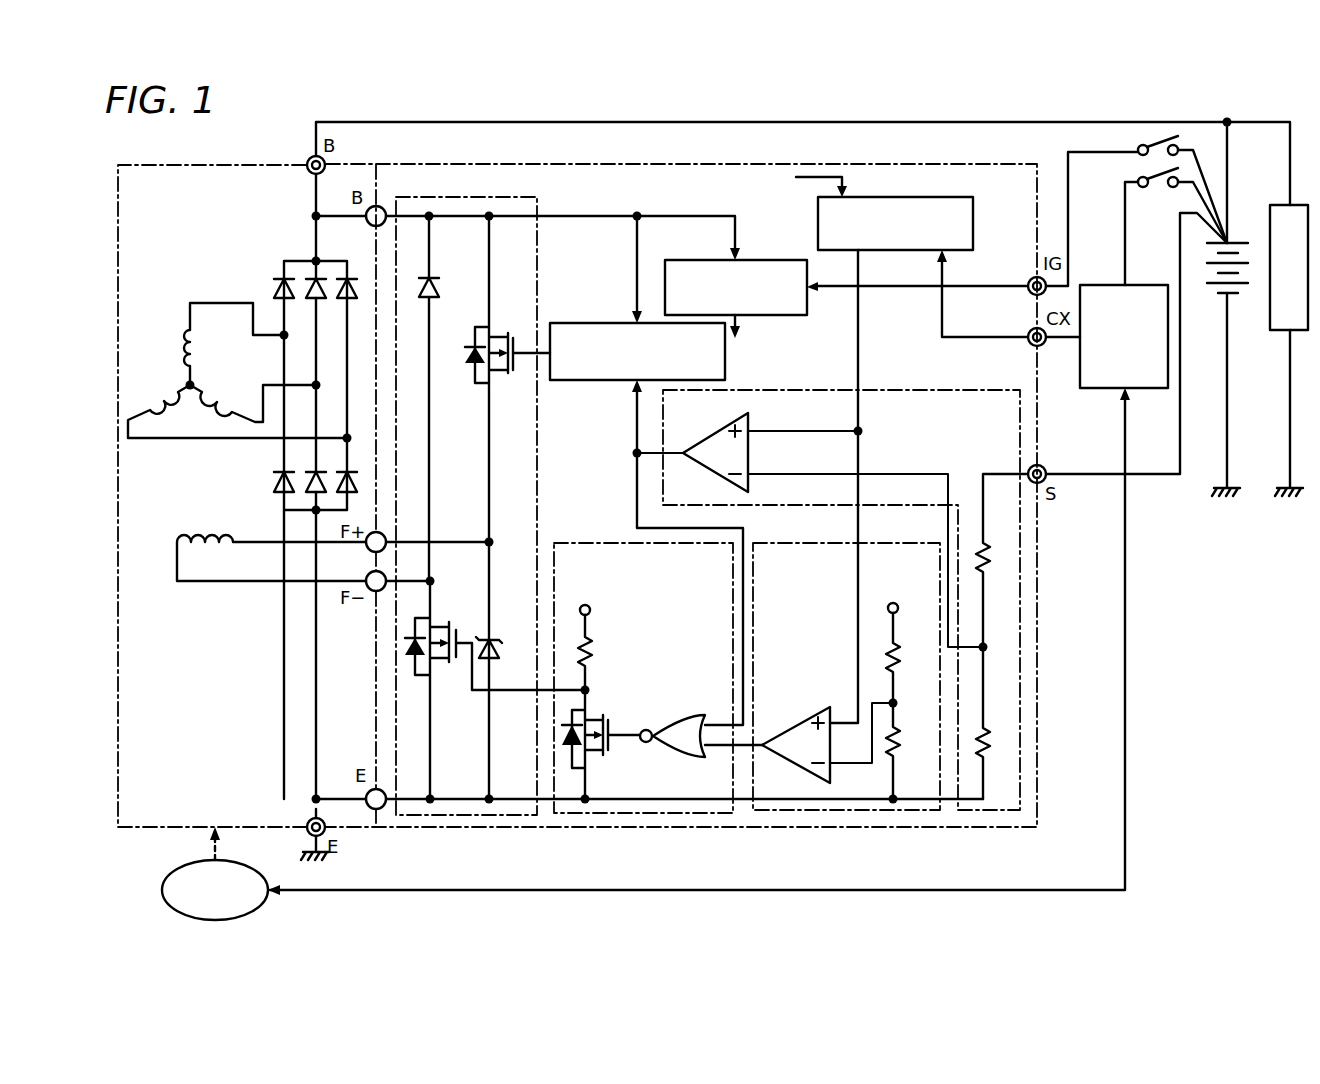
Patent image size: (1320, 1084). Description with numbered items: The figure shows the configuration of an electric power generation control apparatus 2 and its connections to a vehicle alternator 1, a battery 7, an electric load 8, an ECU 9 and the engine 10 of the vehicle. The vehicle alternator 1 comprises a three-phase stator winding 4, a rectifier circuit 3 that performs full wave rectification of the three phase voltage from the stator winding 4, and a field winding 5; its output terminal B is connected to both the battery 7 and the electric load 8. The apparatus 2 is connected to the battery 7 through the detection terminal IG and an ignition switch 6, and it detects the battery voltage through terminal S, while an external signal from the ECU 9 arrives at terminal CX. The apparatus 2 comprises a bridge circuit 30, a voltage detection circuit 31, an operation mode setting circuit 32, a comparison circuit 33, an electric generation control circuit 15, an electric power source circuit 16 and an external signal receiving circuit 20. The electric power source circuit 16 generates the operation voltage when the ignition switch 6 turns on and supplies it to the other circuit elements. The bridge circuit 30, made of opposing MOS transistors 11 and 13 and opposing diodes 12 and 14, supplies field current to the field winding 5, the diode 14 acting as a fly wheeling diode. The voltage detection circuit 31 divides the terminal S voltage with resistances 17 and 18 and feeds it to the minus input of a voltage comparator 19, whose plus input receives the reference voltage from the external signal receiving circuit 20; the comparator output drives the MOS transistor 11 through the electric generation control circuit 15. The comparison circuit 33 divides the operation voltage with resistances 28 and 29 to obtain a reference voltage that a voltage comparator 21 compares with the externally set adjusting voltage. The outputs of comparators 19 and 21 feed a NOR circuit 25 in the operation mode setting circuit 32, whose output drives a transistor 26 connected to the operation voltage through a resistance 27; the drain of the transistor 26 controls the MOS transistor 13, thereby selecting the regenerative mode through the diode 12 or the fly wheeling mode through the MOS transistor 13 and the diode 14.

The vehicle alternator 1 is at (282, 163).
The electric power generation control apparatus 2 is at (1036, 163).
The rectifier circuit 3 is at (303, 261).
The three-phase stator winding 4 is at (186, 382).
The field winding 5 is at (205, 535).
The ignition switch 6 is at (1138, 145).
The battery 7 is at (1236, 243).
The electric load 8 is at (1297, 205).
The ECU 9 is at (1100, 285).
The engine 10 is at (176, 868).
The MOS transistor 11 is at (496, 336).
The diode 12 is at (436, 278).
The MOS transistor 13 is at (440, 625).
The fly wheeling diode 14 is at (492, 640).
The electric generation control circuit 15 is at (590, 323).
The electric power source circuit 16 is at (772, 260).
The resistance 17 is at (985, 572).
The resistance 18 is at (985, 728).
The voltage comparator 19 is at (710, 437).
The external signal receiving circuit 20 is at (973, 210).
The voltage comparator 21 is at (800, 725).
The NOR circuit 25 is at (690, 715).
The transistor 26 is at (593, 752).
The resistance 27 is at (592, 652).
The resistance 28 is at (899, 668).
The resistance 29 is at (899, 748).
The bridge circuit 30 is at (540, 197).
The voltage detection circuit 31 is at (967, 390).
The operation mode setting circuit 32 is at (558, 543).
The comparison circuit 33 is at (890, 543).